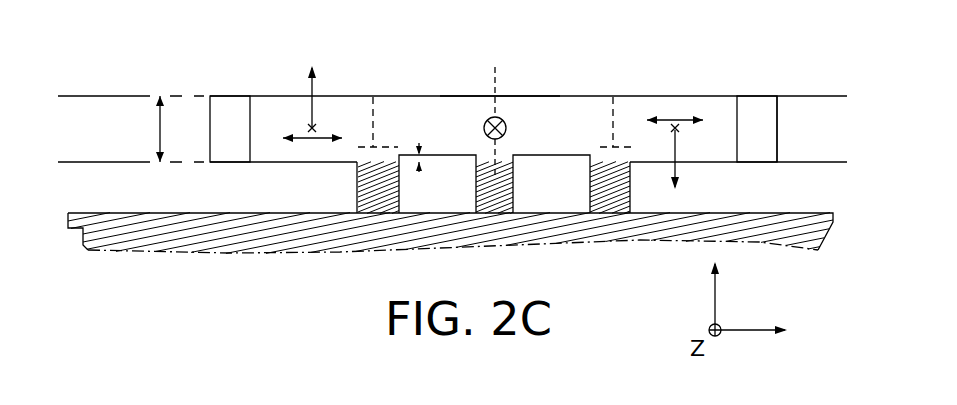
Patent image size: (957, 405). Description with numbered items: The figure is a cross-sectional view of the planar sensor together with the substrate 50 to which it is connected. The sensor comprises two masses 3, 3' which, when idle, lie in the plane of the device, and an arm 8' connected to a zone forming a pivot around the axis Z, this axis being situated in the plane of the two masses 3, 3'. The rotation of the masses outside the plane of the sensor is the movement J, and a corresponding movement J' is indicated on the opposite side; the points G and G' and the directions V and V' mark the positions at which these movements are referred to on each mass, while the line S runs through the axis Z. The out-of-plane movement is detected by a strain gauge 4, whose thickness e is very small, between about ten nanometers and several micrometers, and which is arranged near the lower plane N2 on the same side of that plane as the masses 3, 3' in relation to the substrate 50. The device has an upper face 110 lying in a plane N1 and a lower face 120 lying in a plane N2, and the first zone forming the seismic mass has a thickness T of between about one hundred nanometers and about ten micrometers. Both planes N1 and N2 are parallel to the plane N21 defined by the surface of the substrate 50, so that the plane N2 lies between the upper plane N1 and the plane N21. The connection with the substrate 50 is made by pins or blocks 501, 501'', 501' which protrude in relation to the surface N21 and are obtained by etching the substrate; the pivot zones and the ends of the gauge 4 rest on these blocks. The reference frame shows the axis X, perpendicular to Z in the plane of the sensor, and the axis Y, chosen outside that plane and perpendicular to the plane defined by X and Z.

The upper plane N1 is at (130, 94).
The lower plane N2 is at (80, 160).
The substrate surface plane N21 is at (135, 212).
The first thickness T is at (150, 129).
The out-of-plane movement J is at (316, 89).
The reference point on left arm G is at (299, 127).
The tangential direction at point G V is at (312, 148).
The normal direction at point G' J' is at (685, 164).
The reference point on right arm G' is at (689, 137).
The tangential direction at point G' V' is at (675, 109).
The mass 3 is at (230, 152).
The mass 3' is at (757, 154).
The upper face 110 is at (648, 95).
The lower face 120 is at (760, 163).
The symmetry axis S is at (496, 76).
The axis Z is at (502, 117).
The connecting arm 8' is at (500, 73).
The strain gauge 4 is at (449, 153).
The gauge thickness e is at (427, 169).
The pin or block 501 is at (339, 188).
The pin or block 501'' is at (451, 185).
The pin or block 501' is at (571, 185).
The substrate 50 is at (253, 250).
The second axis X is at (754, 343).
The third axis Y is at (707, 287).